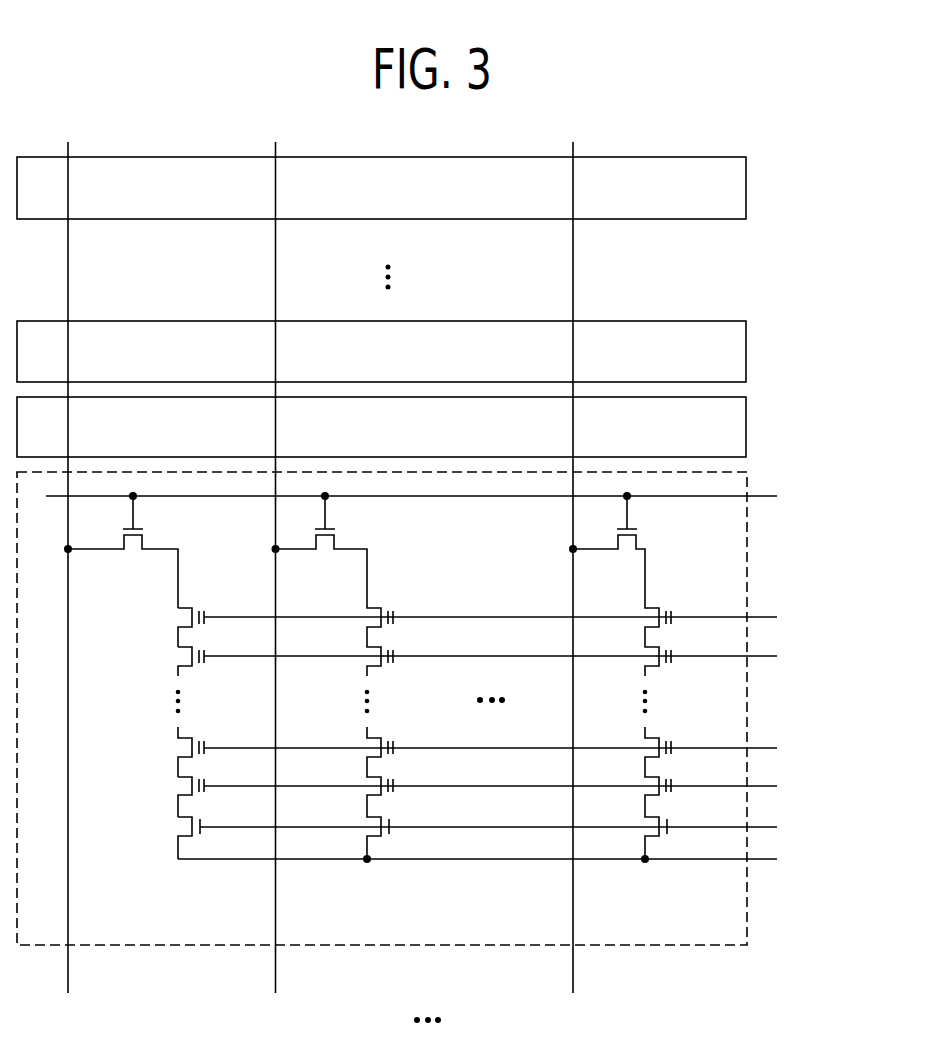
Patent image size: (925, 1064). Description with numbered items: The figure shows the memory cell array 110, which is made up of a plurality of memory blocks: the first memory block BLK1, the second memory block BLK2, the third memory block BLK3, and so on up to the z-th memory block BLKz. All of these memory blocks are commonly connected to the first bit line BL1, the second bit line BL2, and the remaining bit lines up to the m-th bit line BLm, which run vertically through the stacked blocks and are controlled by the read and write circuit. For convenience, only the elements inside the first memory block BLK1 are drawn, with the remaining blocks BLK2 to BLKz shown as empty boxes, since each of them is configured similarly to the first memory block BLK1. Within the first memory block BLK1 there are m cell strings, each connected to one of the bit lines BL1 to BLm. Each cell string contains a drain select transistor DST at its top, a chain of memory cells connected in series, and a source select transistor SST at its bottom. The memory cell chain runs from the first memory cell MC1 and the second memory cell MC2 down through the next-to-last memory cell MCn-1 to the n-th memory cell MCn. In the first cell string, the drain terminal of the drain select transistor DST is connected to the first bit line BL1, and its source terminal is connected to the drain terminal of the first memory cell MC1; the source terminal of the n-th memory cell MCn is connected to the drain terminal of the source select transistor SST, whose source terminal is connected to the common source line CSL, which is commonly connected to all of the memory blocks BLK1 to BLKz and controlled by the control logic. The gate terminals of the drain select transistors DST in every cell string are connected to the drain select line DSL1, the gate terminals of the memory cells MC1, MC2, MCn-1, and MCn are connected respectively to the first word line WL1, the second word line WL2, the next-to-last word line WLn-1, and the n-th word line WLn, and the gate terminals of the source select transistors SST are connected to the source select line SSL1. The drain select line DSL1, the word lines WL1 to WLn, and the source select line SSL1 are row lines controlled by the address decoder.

The memory cell array 110 is at (834, 103).
The first memory block BLK1 is at (747, 908).
The second memory block BLK2 is at (381, 427).
The third memory block BLK3 is at (381, 351).
The z-th memory block BLKz is at (381, 188).
The drain select transistor DST is at (123, 552).
The source select transistor SST is at (169, 836).
The first memory cell MC1 is at (170, 624).
The second memory cell MC2 is at (170, 658).
The (n-1)-th memory cell MCn-1 is at (155, 752).
The n-th memory cell MCn is at (168, 794).
The drain select line DSL1 is at (436, 497).
The first word line WL1 is at (508, 617).
The second word line WL2 is at (510, 656).
The (n-1)-th word line WLn-1 is at (523, 748).
The n-th word line WLn is at (512, 787).
The source select line SSL1 is at (511, 828).
The common source line CSL is at (496, 858).
The first bit line BL1 is at (67, 585).
The second bit line BL2 is at (276, 585).
The m-th bit line BLm is at (576, 585).